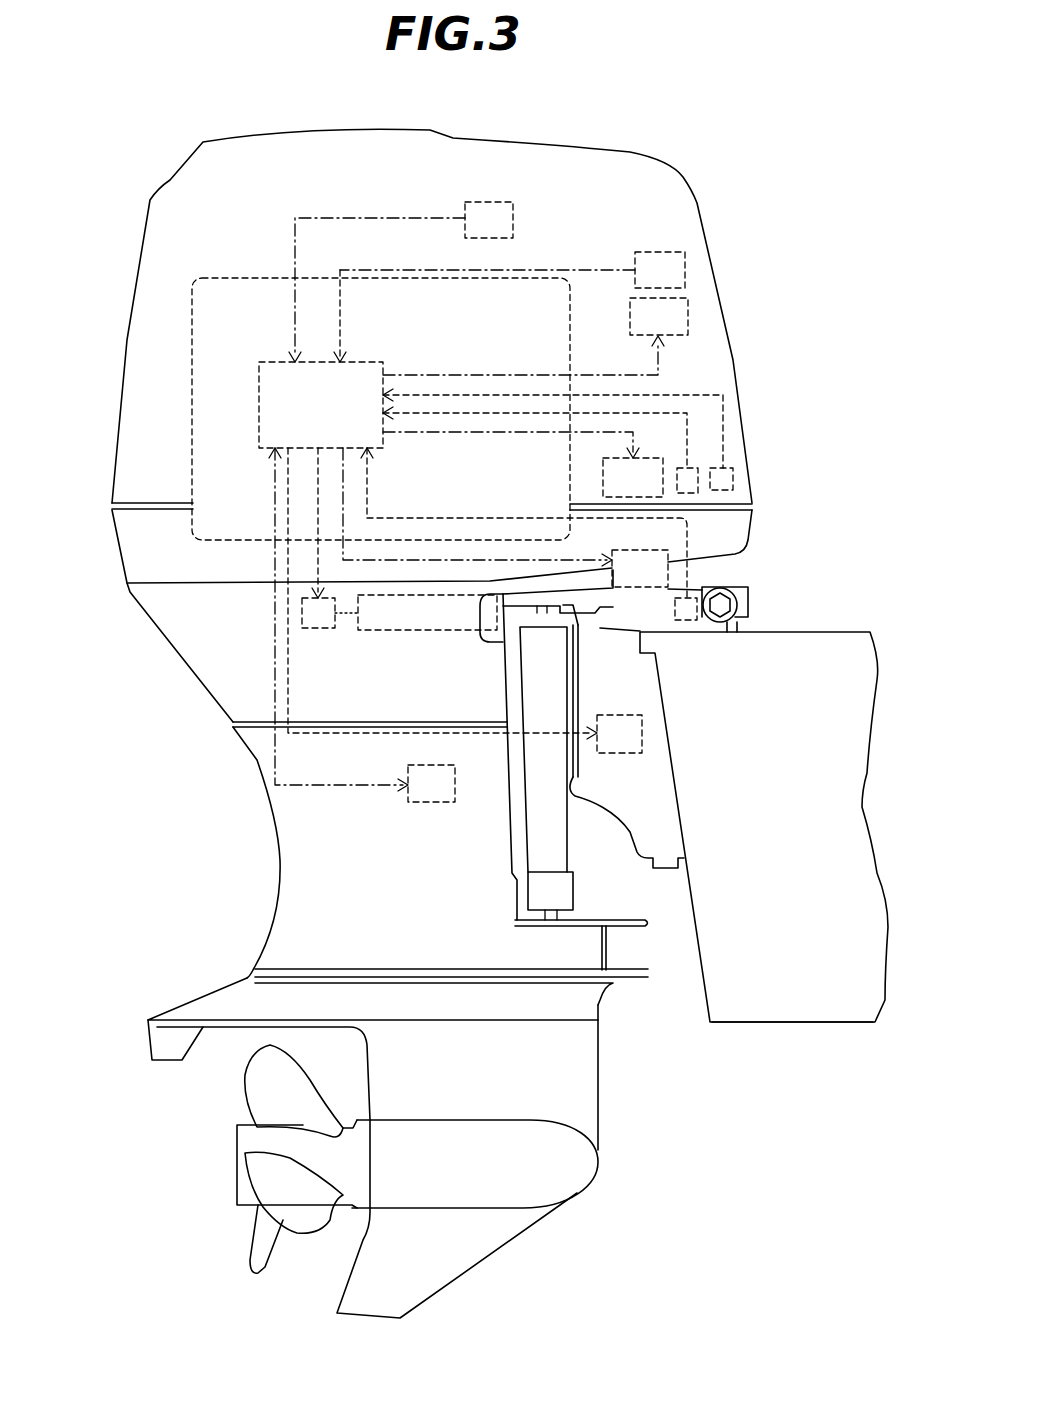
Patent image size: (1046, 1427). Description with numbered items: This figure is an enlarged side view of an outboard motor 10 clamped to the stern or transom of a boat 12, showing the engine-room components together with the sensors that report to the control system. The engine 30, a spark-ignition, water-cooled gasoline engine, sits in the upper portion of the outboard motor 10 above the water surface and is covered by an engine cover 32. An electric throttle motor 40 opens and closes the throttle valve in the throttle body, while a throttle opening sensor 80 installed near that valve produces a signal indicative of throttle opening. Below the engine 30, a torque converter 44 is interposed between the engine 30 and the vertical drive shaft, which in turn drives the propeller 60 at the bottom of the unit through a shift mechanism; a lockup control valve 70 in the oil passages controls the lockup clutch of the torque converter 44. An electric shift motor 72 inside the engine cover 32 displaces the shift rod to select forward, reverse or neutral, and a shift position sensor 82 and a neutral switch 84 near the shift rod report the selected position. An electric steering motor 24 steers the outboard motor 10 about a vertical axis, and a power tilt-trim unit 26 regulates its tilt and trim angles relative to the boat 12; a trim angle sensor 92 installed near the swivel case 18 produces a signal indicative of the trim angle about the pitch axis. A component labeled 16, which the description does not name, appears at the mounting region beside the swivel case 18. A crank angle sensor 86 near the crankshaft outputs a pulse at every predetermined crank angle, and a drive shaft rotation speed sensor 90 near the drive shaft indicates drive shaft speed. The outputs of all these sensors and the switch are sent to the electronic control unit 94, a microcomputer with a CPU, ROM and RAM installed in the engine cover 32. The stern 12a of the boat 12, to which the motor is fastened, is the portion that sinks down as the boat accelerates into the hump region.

The outboard motor 10 is at (702, 170).
The boat 12 is at (752, 1023).
The stern 12a is at (722, 1003).
The tilt shaft 16 is at (725, 605).
The swivel case 18 is at (655, 818).
The electric steering motor 24 is at (640, 568).
The power tilt-trim unit 26 is at (643, 720).
The internal combustion engine 30 is at (190, 322).
The engine cover 32 is at (142, 237).
The electric throttle motor 40 is at (659, 316).
The torque converter 44 is at (425, 630).
The propeller 60 is at (260, 1238).
The lockup control valve 70 is at (318, 628).
The electric shift motor 72 is at (633, 477).
The throttle opening sensor 80 is at (648, 252).
The shift position sensor 82 is at (697, 493).
The neutral switch 84 is at (735, 474).
The crank angle sensor 86 is at (513, 210).
The drive shaft rotation speed sensor 90 is at (435, 802).
The trim angle sensor 92 is at (697, 600).
The electronic control unit 94 is at (259, 398).